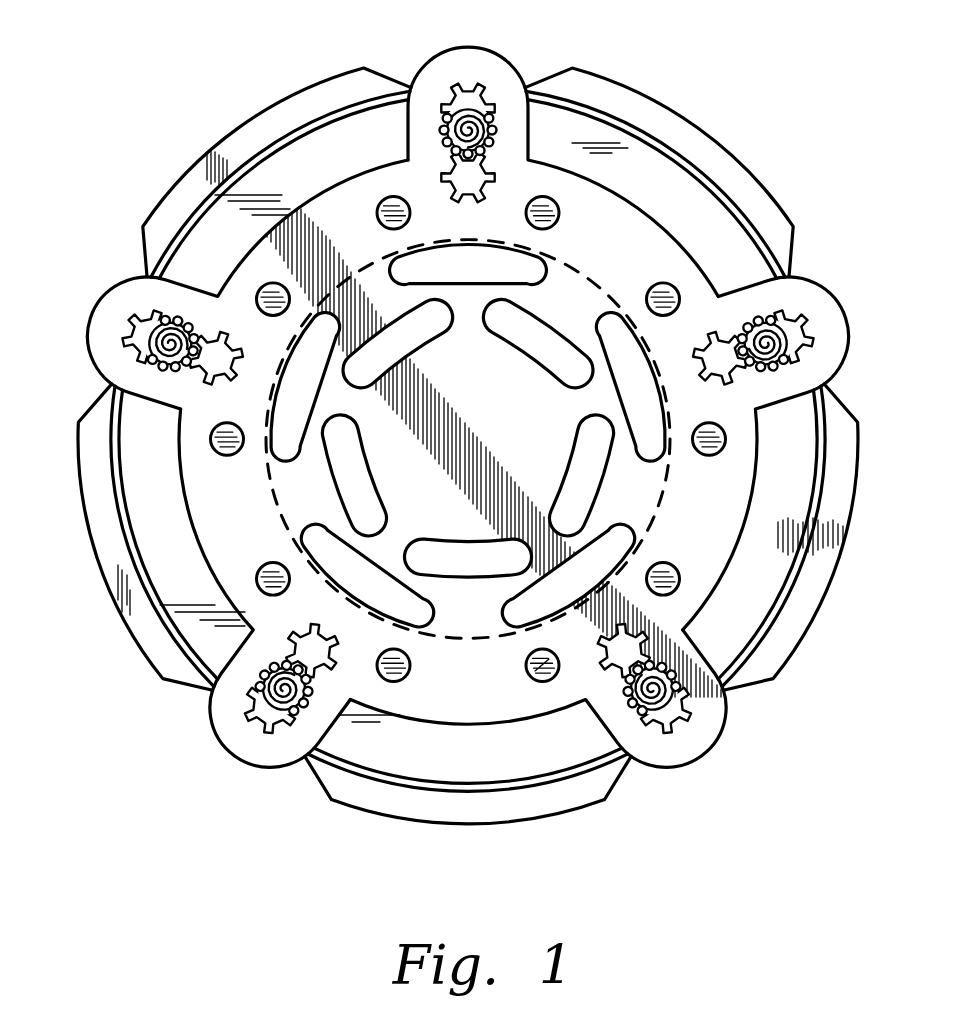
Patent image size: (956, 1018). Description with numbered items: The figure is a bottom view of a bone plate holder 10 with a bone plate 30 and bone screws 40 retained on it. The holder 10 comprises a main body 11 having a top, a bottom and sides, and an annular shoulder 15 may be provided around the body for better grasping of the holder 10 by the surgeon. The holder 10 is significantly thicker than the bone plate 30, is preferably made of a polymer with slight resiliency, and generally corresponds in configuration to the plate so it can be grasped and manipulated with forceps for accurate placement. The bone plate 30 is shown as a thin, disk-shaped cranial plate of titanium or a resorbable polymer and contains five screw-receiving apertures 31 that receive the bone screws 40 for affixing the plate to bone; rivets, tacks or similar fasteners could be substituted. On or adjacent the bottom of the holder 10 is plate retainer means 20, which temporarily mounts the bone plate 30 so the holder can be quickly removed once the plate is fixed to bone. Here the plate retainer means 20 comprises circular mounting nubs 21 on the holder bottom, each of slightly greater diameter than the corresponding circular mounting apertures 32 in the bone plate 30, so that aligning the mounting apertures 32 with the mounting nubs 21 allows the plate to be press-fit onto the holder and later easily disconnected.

The bone plate holder 10 is at (154, 739).
The main body 11 is at (700, 178).
The annular shoulder 15 is at (243, 124).
The plate retainer means 20 is at (386, 731).
The mounting nub 21 is at (538, 668).
The bone plate 30 is at (710, 548).
The screw-receiving aperture 31 is at (690, 717).
The mounting aperture 32 is at (527, 665).
The bone screw 40 is at (651, 694).